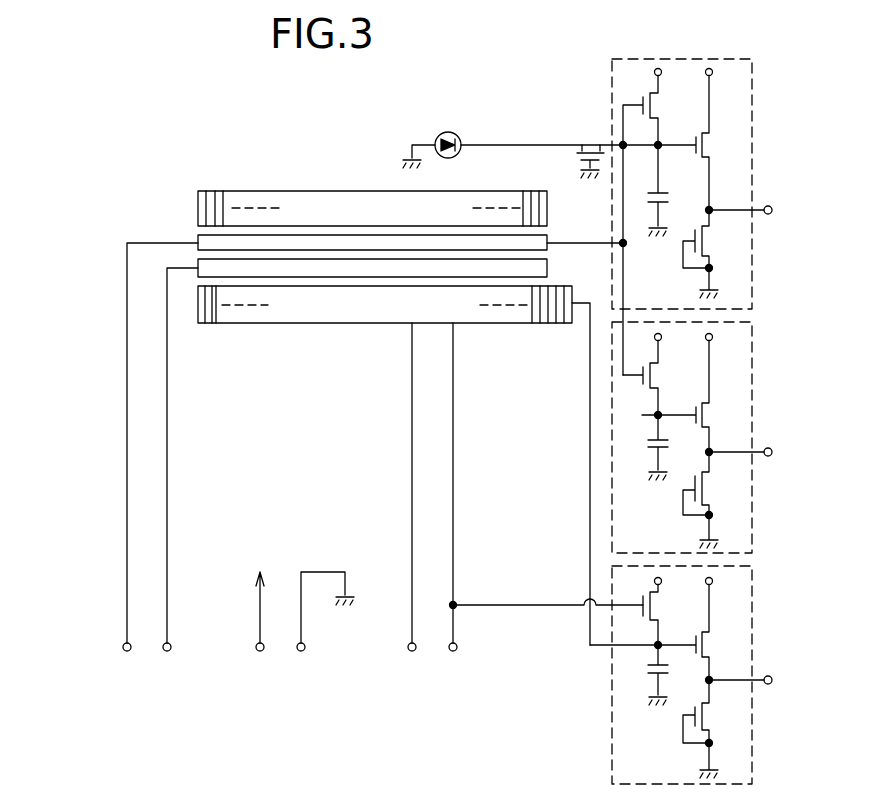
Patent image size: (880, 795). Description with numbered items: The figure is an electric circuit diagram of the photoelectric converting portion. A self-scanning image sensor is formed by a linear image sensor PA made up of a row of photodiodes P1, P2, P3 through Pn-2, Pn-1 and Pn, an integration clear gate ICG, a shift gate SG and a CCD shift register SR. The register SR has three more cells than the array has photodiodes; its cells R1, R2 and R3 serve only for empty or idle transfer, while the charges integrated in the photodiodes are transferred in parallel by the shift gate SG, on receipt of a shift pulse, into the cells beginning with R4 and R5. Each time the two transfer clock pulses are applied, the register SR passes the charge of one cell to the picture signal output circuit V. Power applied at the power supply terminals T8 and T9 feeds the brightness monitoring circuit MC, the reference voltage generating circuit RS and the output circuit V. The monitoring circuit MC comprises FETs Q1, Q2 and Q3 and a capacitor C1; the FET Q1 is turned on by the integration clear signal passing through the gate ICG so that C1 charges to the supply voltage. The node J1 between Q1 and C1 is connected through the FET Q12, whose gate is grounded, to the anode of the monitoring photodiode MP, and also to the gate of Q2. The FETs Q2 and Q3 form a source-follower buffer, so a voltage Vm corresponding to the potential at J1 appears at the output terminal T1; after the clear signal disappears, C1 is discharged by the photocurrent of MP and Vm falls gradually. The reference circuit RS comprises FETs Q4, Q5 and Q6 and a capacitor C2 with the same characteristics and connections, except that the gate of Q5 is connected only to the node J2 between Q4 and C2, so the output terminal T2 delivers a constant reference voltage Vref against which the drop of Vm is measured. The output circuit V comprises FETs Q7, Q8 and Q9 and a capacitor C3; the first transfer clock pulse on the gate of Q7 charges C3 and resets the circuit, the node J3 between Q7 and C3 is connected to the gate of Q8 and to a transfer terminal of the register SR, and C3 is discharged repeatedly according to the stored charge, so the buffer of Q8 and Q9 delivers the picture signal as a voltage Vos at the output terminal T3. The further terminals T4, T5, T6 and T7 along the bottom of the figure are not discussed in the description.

The linear image sensor PA is at (349, 191).
The photodiode Pn is at (200, 191).
The photodiode Pn-1 is at (209, 191).
The photodiode Pn-2 is at (218, 191).
The photodiode P1 is at (543, 191).
The photodiode P2 is at (535, 191).
The photodiode P3 is at (527, 191).
The integration clear gate ICG is at (198, 237).
The shift gate SG is at (198, 261).
The CCD shift register SR is at (328, 323).
The cell R1 is at (568, 323).
The cell R2 is at (560, 323).
The cell R3 is at (552, 323).
The cell R4 is at (544, 323).
The cell R5 is at (536, 323).
The monitoring photodiode MP is at (439, 135).
The FET Q12 is at (586, 145).
The brightness monitoring circuit MC is at (752, 92).
The reference voltage generating circuit RS is at (752, 362).
The picture signal output circuit V is at (752, 605).
The FET Q1 is at (660, 108).
The FET Q2 is at (706, 145).
The FET Q3 is at (704, 240).
The FET Q4 is at (660, 376).
The FET Q5 is at (713, 412).
The FET Q6 is at (705, 487).
The FET Q7 is at (669, 608).
The FET Q8 is at (715, 640).
The FET Q9 is at (714, 712).
The node J1 is at (657, 150).
The node J2 is at (638, 418).
The node J3 is at (656, 648).
The capacitor C1 is at (662, 196).
The capacitor C2 is at (662, 440).
The capacitor C3 is at (662, 667).
The voltage Vm is at (753, 197).
The reference voltage Vref is at (761, 440).
The voltage signal Vos is at (757, 670).
The output terminal T1 is at (770, 214).
The output terminal T2 is at (770, 456).
The output terminal T3 is at (770, 684).
The terminal T4 is at (412, 662).
The terminal T5 is at (453, 662).
The terminal T6 is at (156, 462).
The terminal T7 is at (176, 475).
The power supply terminal T8 is at (260, 616).
The power supply terminal T9 is at (321, 627).